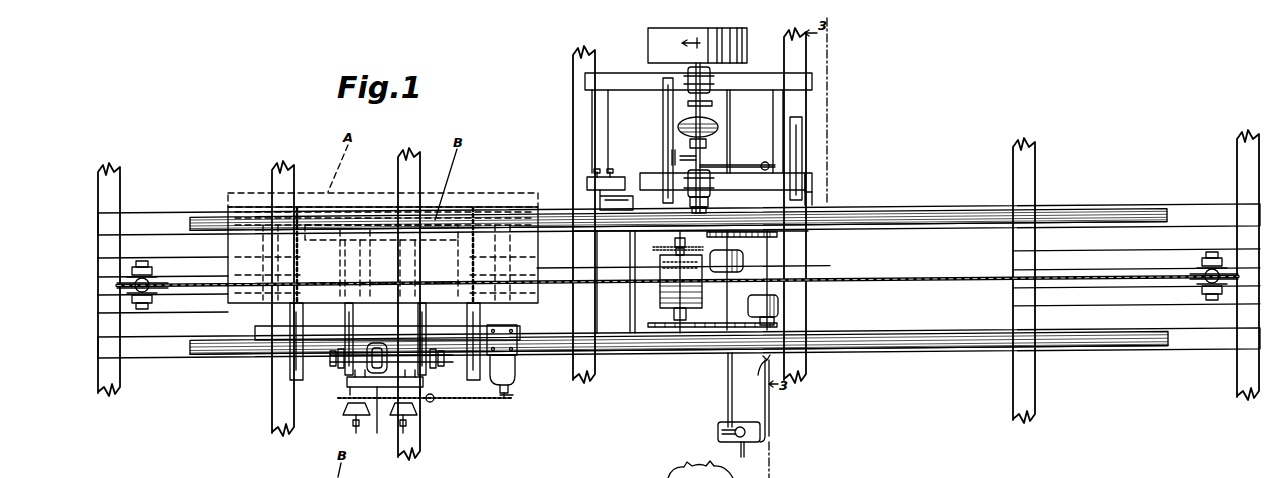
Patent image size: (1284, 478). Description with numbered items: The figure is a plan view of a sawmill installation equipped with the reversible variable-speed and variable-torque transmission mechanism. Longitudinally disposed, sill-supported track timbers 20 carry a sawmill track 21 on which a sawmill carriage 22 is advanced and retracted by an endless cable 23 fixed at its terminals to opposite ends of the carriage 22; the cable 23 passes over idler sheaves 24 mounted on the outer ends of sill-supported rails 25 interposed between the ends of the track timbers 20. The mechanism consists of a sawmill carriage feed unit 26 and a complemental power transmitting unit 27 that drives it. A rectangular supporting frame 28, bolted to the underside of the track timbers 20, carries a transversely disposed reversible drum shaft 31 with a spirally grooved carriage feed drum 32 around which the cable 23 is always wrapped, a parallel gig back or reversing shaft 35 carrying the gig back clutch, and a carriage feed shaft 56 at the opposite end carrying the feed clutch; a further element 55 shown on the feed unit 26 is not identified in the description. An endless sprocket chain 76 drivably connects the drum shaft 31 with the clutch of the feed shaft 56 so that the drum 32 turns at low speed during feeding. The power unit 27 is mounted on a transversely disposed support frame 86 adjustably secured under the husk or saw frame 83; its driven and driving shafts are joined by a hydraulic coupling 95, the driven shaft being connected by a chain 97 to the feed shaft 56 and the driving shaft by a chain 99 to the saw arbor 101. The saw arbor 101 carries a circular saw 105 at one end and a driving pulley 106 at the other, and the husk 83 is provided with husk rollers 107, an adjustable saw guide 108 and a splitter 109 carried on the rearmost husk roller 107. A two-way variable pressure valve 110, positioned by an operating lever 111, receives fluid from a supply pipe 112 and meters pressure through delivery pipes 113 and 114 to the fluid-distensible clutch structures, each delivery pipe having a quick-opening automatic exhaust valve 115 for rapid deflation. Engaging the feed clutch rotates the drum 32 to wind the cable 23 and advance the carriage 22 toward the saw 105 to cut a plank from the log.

The track timbers 20 is at (906, 207).
The sawmill track 21 is at (954, 215).
The sawmill carriage 22 is at (270, 333).
The endless cable 23 is at (878, 284).
The idler sheaves 24 is at (162, 296).
The rails 25 is at (180, 265).
The sawmill carriage feed unit 26 is at (778, 254).
The power transmitting unit 27 is at (706, 144).
The supporting frame 28 is at (630, 313).
The drum shaft 31 is at (675, 240).
The carriage feed drum 32 is at (660, 296).
The gig back shaft 35 is at (722, 307).
The roller 55 is at (710, 255).
The carriage feed shaft 56 is at (778, 270).
The endless sprocket chain 76 is at (665, 328).
The husk 83 is at (590, 118).
The support frame 86 is at (727, 110).
The hydraulic coupling 95 is at (718, 127).
The endless sprocket chain 97 is at (760, 164).
The endless sprocket chain 99 is at (688, 103).
The saw arbor 101 is at (673, 160).
The circular saw 105 is at (680, 158).
The driving pulley 106 is at (648, 41).
The husk rollers 107 is at (663, 125).
The saw guide 108 is at (595, 202).
The splitter 109 is at (816, 205).
The variable pressure valve 110 is at (725, 438).
The valve operating lever 111 is at (718, 426).
The fluid pressure supply pipe 112 is at (746, 447).
The fluid pressure delivery pipe 113 is at (728, 395).
The fluid pressure delivery pipe 114 is at (770, 403).
The quick-opening automatic exhaust valve 115 is at (751, 373).